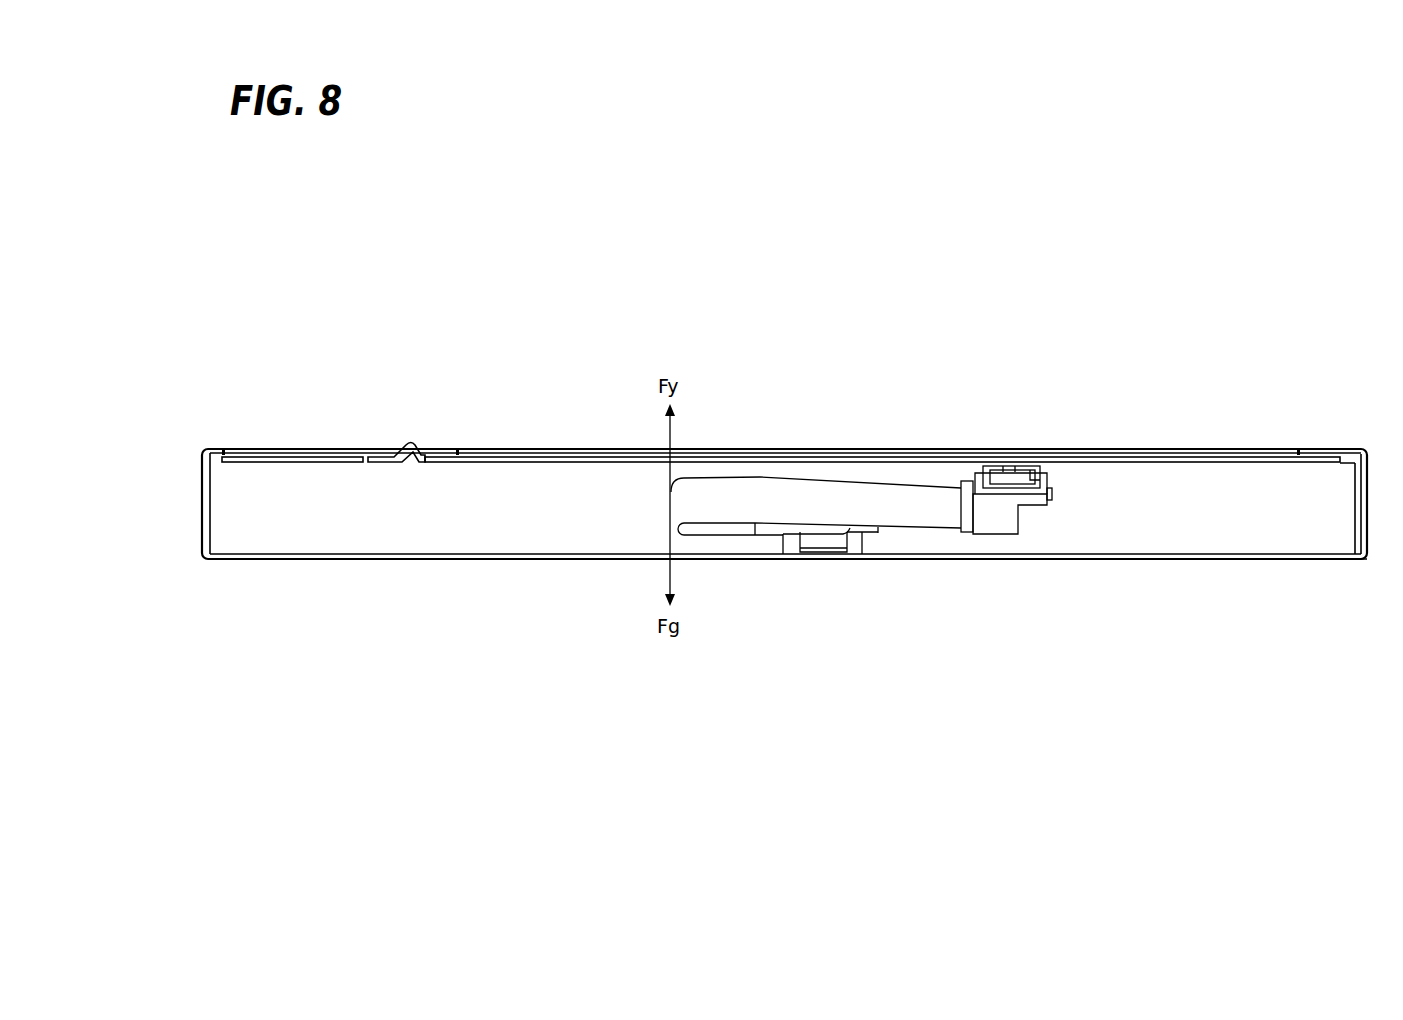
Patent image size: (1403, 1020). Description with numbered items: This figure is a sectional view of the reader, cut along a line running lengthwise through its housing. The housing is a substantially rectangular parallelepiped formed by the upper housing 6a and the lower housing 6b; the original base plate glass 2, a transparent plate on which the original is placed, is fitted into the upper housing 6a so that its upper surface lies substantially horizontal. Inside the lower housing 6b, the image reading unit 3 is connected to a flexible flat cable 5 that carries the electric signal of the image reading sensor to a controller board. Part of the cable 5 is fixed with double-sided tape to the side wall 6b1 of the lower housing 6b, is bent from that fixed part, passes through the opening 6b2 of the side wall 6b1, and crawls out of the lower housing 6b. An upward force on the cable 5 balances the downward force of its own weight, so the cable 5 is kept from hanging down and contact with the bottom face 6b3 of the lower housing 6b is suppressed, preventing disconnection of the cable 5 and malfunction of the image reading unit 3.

The original base plate glass 2 is at (1170, 465).
The image reading unit 3 is at (993, 536).
The flexible flat cable 5 is at (752, 492).
The upper housing 6a is at (1330, 452).
The lower housing 6b is at (1330, 565).
The side wall 6b1 is at (581, 516).
The opening 6b2 is at (790, 568).
The bottom face 6b3 is at (305, 553).